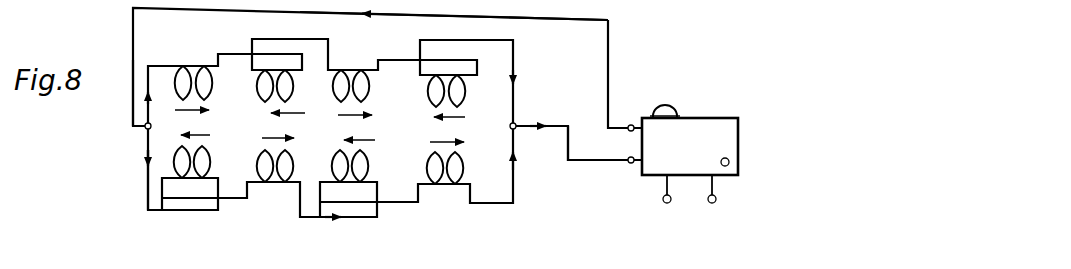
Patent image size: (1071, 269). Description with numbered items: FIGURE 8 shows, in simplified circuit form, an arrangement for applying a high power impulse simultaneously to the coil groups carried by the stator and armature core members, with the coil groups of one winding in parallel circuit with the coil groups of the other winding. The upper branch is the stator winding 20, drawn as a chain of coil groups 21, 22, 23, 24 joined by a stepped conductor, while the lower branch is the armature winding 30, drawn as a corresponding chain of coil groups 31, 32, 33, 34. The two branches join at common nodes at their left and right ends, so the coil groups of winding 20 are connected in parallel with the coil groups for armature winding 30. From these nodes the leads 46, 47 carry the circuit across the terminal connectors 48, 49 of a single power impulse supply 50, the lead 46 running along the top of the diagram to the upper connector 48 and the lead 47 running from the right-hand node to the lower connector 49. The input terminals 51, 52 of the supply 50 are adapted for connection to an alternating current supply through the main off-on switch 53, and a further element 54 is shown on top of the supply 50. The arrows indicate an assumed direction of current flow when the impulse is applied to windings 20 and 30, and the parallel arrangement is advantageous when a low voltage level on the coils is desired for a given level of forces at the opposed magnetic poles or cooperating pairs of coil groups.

The winding 20 is at (124, 98).
The first coil 21 is at (193, 66).
The second coil 22 is at (284, 70).
The third coil 23 is at (352, 70).
The fourth coil 24 is at (447, 75).
The armature winding 30 is at (140, 190).
The fifth coil 31 is at (193, 180).
The sixth coil 32 is at (275, 184).
The seventh coil 33 is at (355, 184).
The eighth coil 34 is at (445, 186).
The lead 46 is at (563, 18).
The lead 47 is at (600, 163).
The terminal connector 48 is at (632, 125).
The terminal connector 49 is at (632, 164).
The power impulse supply 50 is at (718, 118).
The input terminal 51 is at (667, 203).
The input terminal 52 is at (712, 203).
The main off-on switch 53 is at (730, 162).
The push button 54 is at (675, 99).